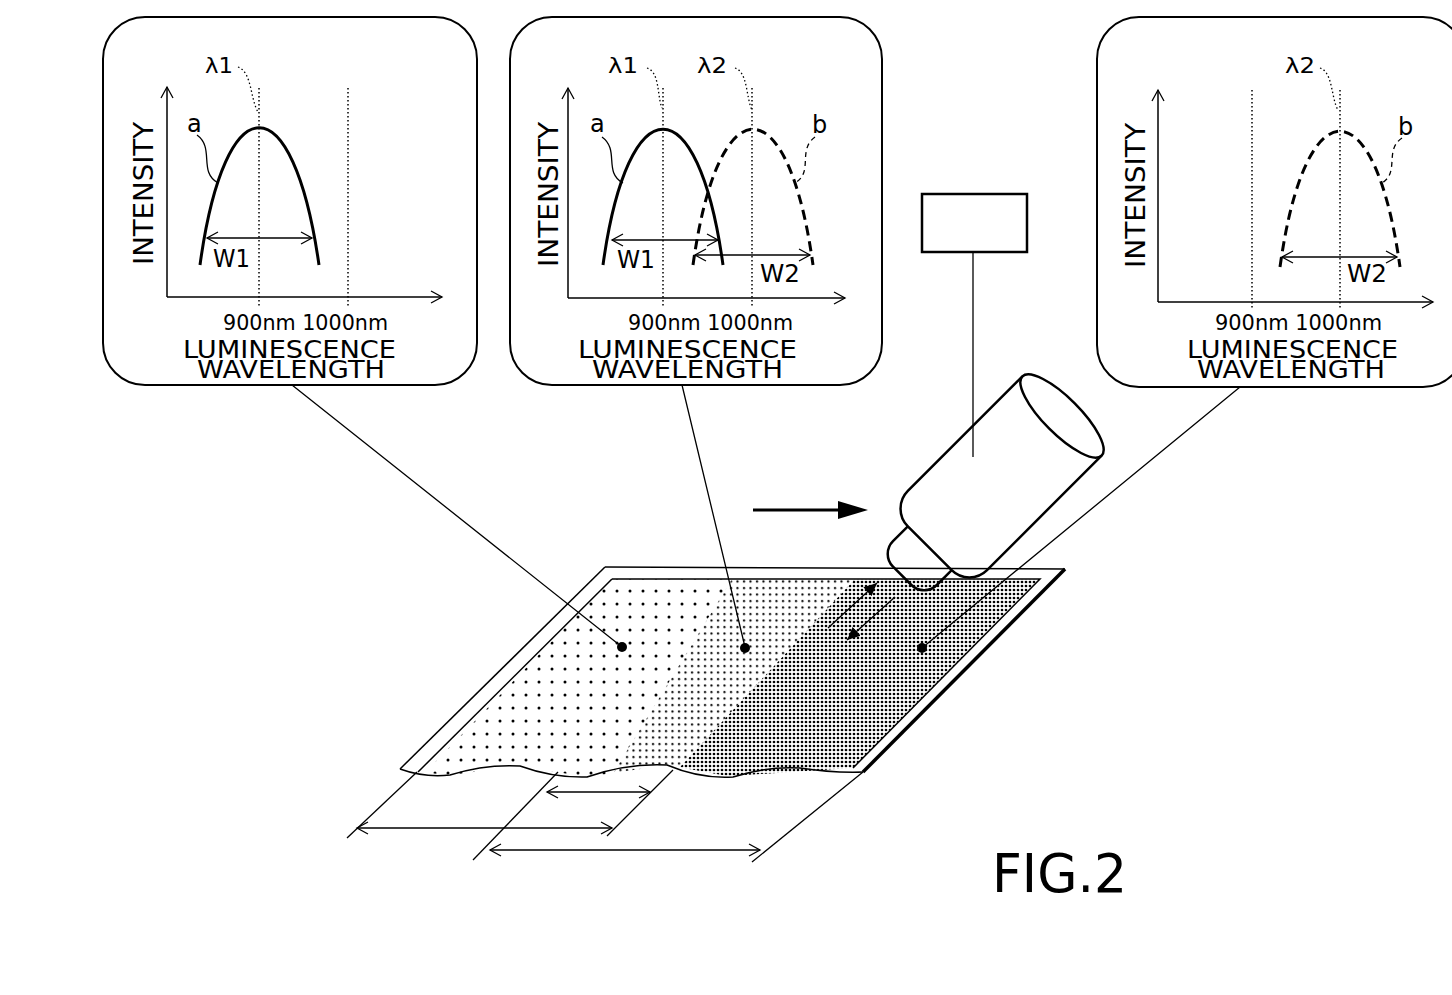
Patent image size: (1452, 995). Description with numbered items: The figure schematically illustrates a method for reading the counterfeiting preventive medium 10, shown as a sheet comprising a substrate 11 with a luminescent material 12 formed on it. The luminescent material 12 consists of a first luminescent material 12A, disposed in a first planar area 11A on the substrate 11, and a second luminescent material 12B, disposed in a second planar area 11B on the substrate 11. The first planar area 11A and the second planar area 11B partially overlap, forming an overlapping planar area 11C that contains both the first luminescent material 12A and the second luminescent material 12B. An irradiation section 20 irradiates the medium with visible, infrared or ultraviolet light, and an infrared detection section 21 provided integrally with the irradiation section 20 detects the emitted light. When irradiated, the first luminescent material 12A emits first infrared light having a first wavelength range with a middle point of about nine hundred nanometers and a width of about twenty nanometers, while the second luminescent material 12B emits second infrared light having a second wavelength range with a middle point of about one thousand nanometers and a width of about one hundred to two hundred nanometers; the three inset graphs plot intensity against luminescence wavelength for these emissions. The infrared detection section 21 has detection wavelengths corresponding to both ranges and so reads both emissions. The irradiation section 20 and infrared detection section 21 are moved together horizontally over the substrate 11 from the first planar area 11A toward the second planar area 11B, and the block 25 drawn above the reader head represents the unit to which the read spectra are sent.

The counterfeiting preventive medium 10 is at (1042, 650).
The substrate 11 is at (890, 732).
The first planar area 11A is at (510, 815).
The second planar area 11B is at (668, 828).
The overlapping planar area 11C is at (598, 808).
The luminescent material 12 is at (710, 633).
The first luminescent material 12A is at (567, 683).
The second luminescent material 12B is at (651, 606).
The irradiation section 20 is at (943, 490).
The infrared detection section 21 is at (915, 561).
The controller 25 is at (970, 194).